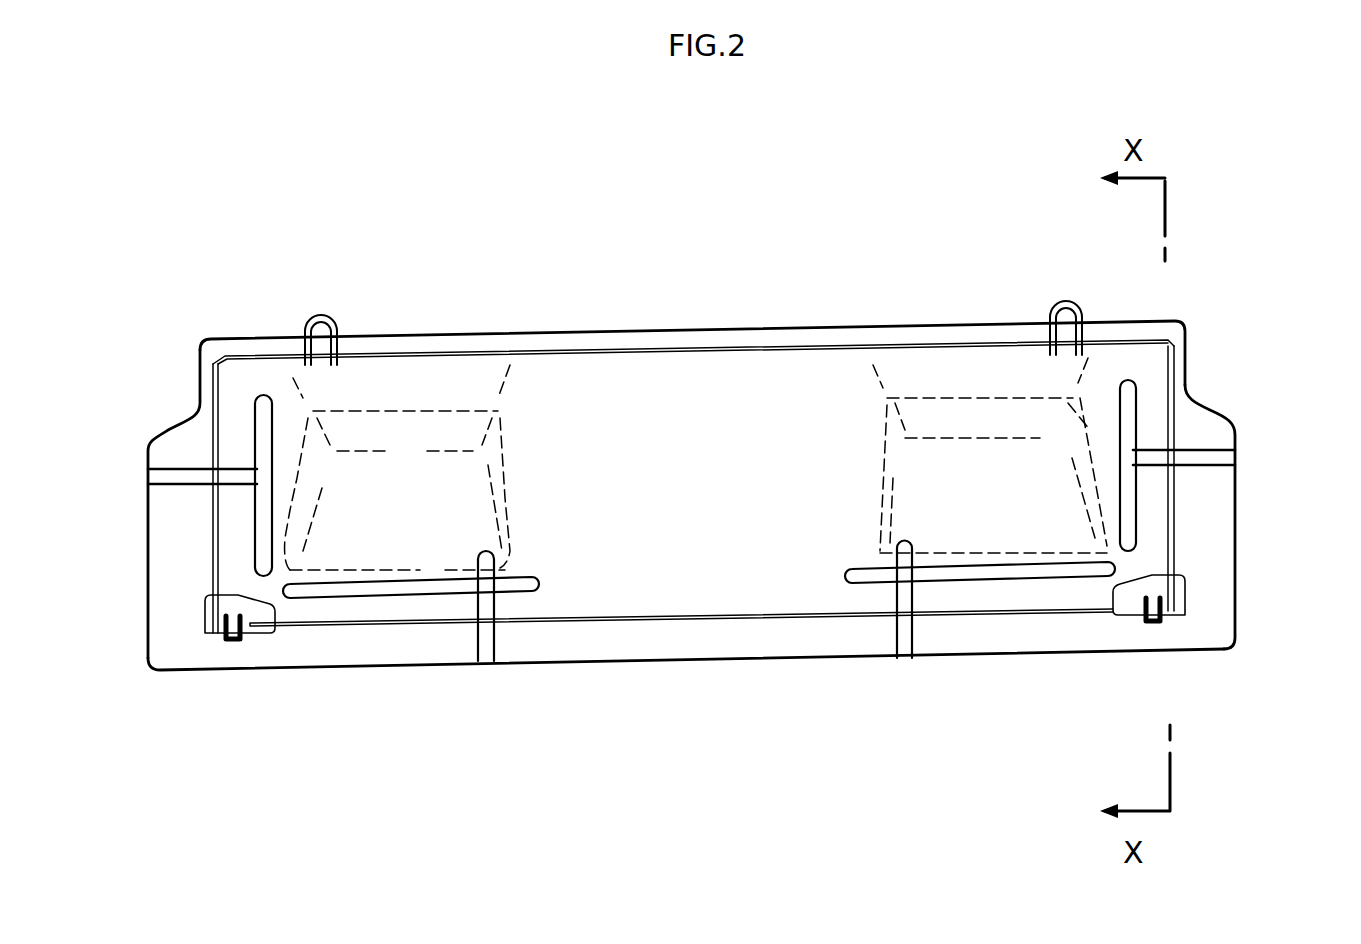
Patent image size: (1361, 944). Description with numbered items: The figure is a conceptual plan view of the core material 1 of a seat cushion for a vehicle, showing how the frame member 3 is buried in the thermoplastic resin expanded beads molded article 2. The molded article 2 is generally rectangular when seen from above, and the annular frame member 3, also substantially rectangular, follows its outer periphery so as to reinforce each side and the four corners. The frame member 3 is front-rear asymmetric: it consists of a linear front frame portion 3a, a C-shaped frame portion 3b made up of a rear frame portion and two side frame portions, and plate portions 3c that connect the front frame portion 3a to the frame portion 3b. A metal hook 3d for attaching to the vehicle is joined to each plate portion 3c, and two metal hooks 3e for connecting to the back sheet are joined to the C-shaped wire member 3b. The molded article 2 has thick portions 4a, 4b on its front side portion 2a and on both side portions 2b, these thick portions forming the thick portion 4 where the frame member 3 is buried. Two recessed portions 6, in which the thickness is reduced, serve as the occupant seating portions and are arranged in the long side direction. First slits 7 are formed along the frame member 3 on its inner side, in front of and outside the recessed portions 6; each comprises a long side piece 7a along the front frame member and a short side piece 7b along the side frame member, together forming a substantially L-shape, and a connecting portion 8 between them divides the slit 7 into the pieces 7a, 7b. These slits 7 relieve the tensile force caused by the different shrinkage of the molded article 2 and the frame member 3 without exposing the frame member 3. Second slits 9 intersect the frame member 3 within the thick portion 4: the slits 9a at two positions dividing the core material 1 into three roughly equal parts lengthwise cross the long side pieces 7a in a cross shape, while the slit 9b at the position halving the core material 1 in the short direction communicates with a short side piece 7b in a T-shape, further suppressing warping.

The core material for a seat cushion for a vehicle 1 is at (660, 334).
The thermoplastic resin expanded beads molded article 2 is at (803, 392).
The front side portion 2a is at (686, 711).
The side portions 2b is at (691, 504).
The frame member 3 is at (710, 491).
The front frame portion 3a is at (772, 612).
The frame portion 3b is at (462, 357).
The plate portions 3c is at (710, 659).
The metal hook 3d is at (693, 685).
The metal hooks 3e is at (680, 287).
The thick portion 4 is at (710, 654).
The thick portion 4a is at (450, 707).
The thick portions 4b is at (726, 596).
The recessed portions 6 is at (418, 496).
The first slits 7 is at (686, 528).
The long side pieces 7a is at (699, 649).
The short side pieces 7b is at (702, 448).
The connecting portions 8 is at (696, 529).
The slit 9 is at (705, 549).
The slits 9a is at (695, 632).
The slit 9b is at (721, 430).